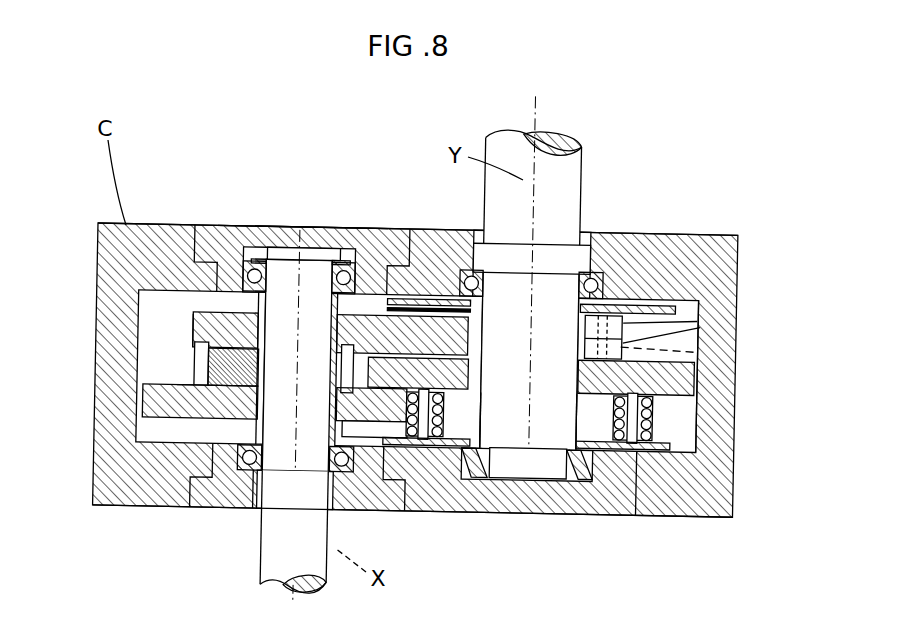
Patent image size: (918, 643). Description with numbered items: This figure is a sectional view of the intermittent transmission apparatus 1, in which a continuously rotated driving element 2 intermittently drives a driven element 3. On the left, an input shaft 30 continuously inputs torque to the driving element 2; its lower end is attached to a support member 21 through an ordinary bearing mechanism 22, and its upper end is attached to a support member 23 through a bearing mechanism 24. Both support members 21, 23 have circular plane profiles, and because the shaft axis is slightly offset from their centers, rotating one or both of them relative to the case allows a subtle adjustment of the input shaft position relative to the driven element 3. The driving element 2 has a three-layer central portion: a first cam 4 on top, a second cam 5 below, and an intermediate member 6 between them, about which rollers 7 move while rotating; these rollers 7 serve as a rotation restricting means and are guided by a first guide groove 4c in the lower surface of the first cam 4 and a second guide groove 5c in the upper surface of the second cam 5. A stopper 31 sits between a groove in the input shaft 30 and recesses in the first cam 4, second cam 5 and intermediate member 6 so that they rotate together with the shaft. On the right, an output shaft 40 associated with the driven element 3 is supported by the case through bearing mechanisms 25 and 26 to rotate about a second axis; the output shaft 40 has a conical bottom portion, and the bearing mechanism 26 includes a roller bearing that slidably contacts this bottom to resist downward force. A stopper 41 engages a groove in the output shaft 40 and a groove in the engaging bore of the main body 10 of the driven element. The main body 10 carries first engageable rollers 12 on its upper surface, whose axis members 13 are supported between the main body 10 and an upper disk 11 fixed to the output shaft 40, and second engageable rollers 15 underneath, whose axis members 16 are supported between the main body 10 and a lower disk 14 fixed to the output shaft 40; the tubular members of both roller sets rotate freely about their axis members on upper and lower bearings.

The intermittent transmission apparatus 1 is at (722, 146).
The driving element 2 is at (180, 533).
The driven element 3 is at (724, 222).
The first cam 4 is at (190, 307).
The first guide groove 4c is at (197, 342).
The second cam 5 is at (143, 398).
The second guide groove 5c is at (195, 380).
The intermediate member 6 is at (205, 358).
The rollers 7 is at (197, 375).
The main body of the driven element 10 is at (620, 378).
The upper disk 11 is at (622, 302).
The first engageable rollers 12 is at (622, 340).
The axis members 13 is at (700, 350).
The lower disk 14 is at (673, 443).
The second engageable rollers 15 is at (645, 422).
The axis members 16 is at (640, 505).
The support member 21 is at (253, 505).
The bearing mechanism 22 is at (238, 447).
The support member 23 is at (300, 247).
The bearing mechanism 24 is at (247, 262).
The bearing mechanism 25 is at (613, 268).
The bearing mechanism 26 is at (582, 460).
The input shaft 30 is at (317, 532).
The stopper 31 is at (176, 225).
The output shaft 40 is at (568, 180).
The stopper 41 is at (477, 407).